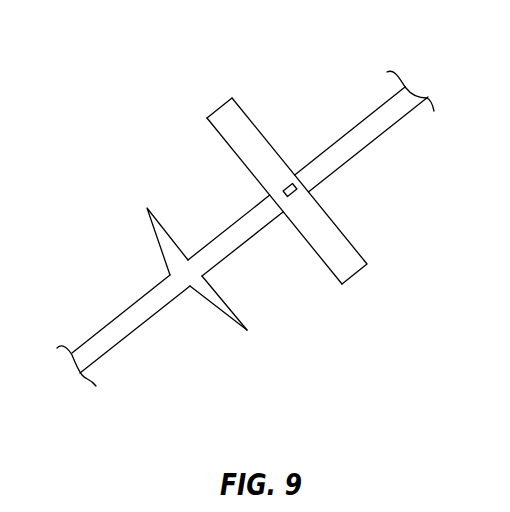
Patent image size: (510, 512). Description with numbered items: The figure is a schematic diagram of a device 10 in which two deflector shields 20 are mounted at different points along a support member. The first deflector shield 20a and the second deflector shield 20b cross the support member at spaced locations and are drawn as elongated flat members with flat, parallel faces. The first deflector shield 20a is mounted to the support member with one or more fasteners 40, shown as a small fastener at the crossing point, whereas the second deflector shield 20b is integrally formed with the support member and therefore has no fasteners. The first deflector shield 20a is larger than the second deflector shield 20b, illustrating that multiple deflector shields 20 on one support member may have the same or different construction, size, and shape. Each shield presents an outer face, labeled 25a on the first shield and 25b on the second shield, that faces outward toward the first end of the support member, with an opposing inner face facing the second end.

The device 10 is at (110, 139).
The deflector shield 20 is at (362, 122).
The first deflector shield 20a is at (228, 110).
The second deflector shield 20b is at (146, 207).
The outer face of first deflector shield 25a is at (344, 233).
The outer face of second deflector shield 25b is at (219, 292).
The fastener 40 is at (292, 182).